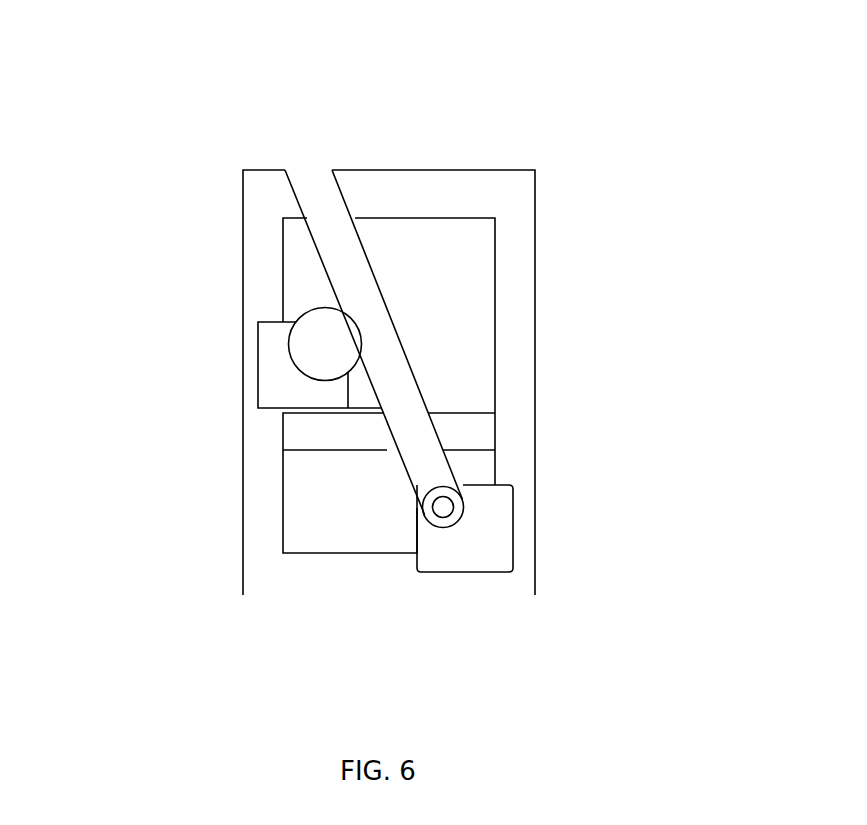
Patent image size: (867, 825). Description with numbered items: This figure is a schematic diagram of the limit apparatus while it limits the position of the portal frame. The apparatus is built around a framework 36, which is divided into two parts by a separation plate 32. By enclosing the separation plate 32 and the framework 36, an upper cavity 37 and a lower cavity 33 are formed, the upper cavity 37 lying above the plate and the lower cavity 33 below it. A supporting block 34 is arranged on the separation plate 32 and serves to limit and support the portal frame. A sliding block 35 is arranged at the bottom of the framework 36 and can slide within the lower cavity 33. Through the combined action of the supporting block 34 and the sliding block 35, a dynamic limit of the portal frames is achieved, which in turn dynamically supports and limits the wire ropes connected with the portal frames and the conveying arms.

The separation plate 32 is at (463, 393).
The lower cavity 33 is at (377, 503).
The supporting block 34 is at (325, 350).
The sliding block 35 is at (487, 562).
The framework 36 is at (525, 225).
The upper cavity 37 is at (400, 255).